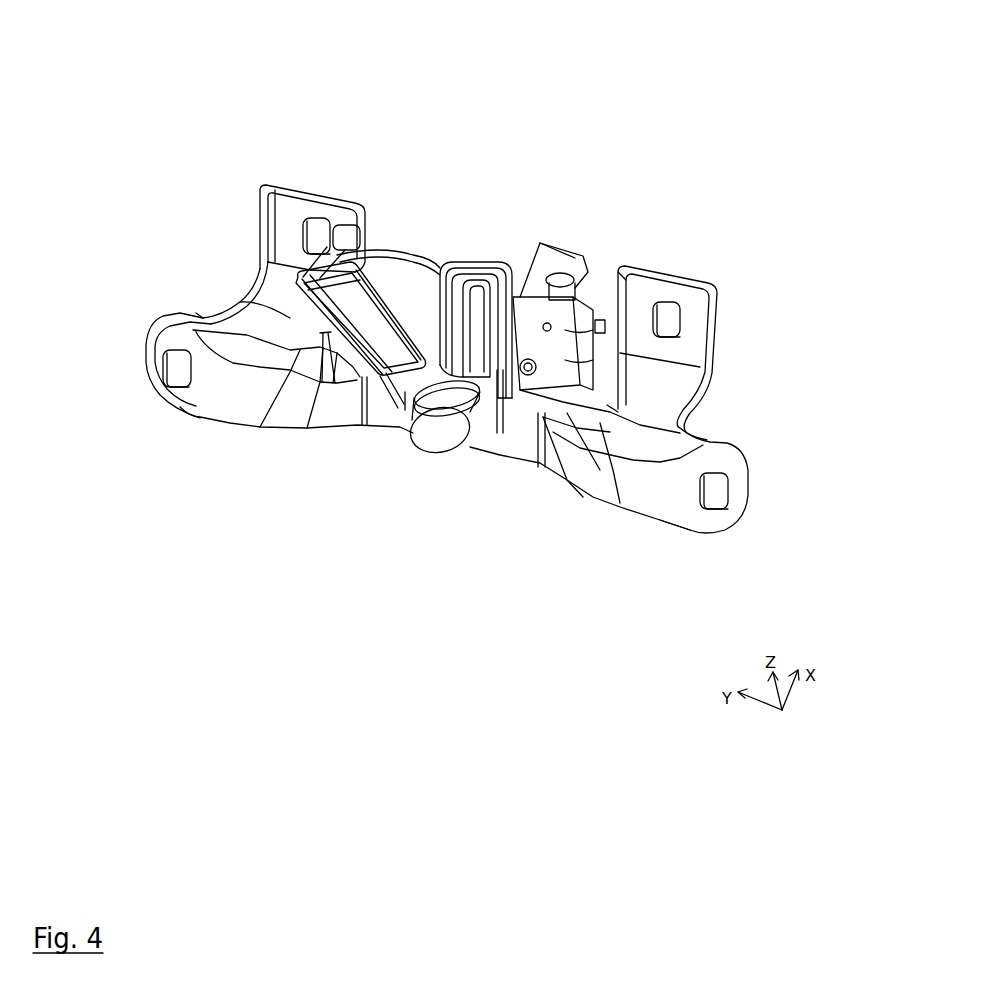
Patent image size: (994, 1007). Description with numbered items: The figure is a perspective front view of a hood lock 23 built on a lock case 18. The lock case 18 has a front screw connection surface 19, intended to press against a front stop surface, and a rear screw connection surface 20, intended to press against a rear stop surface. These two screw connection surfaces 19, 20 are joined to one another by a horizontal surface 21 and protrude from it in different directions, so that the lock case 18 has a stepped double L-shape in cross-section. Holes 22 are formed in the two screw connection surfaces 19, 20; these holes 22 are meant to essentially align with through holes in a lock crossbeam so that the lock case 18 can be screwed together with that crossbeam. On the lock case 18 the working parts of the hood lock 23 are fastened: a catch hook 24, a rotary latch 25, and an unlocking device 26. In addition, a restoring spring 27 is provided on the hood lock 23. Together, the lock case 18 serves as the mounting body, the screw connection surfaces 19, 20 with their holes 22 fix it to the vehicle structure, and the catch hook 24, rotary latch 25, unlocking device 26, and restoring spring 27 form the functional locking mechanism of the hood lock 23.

The lock case 18 is at (347, 407).
The front screw connection surface 19 is at (162, 338).
The rear screw connection surface 20 is at (295, 205).
The horizontal surface 21 is at (292, 318).
The holes 22 is at (312, 234).
The hood lock 23 is at (330, 556).
The catch hook 24 is at (483, 262).
The rotary latch 25 is at (430, 262).
The unlocking device 26 is at (545, 246).
The restoring spring 27 is at (450, 408).